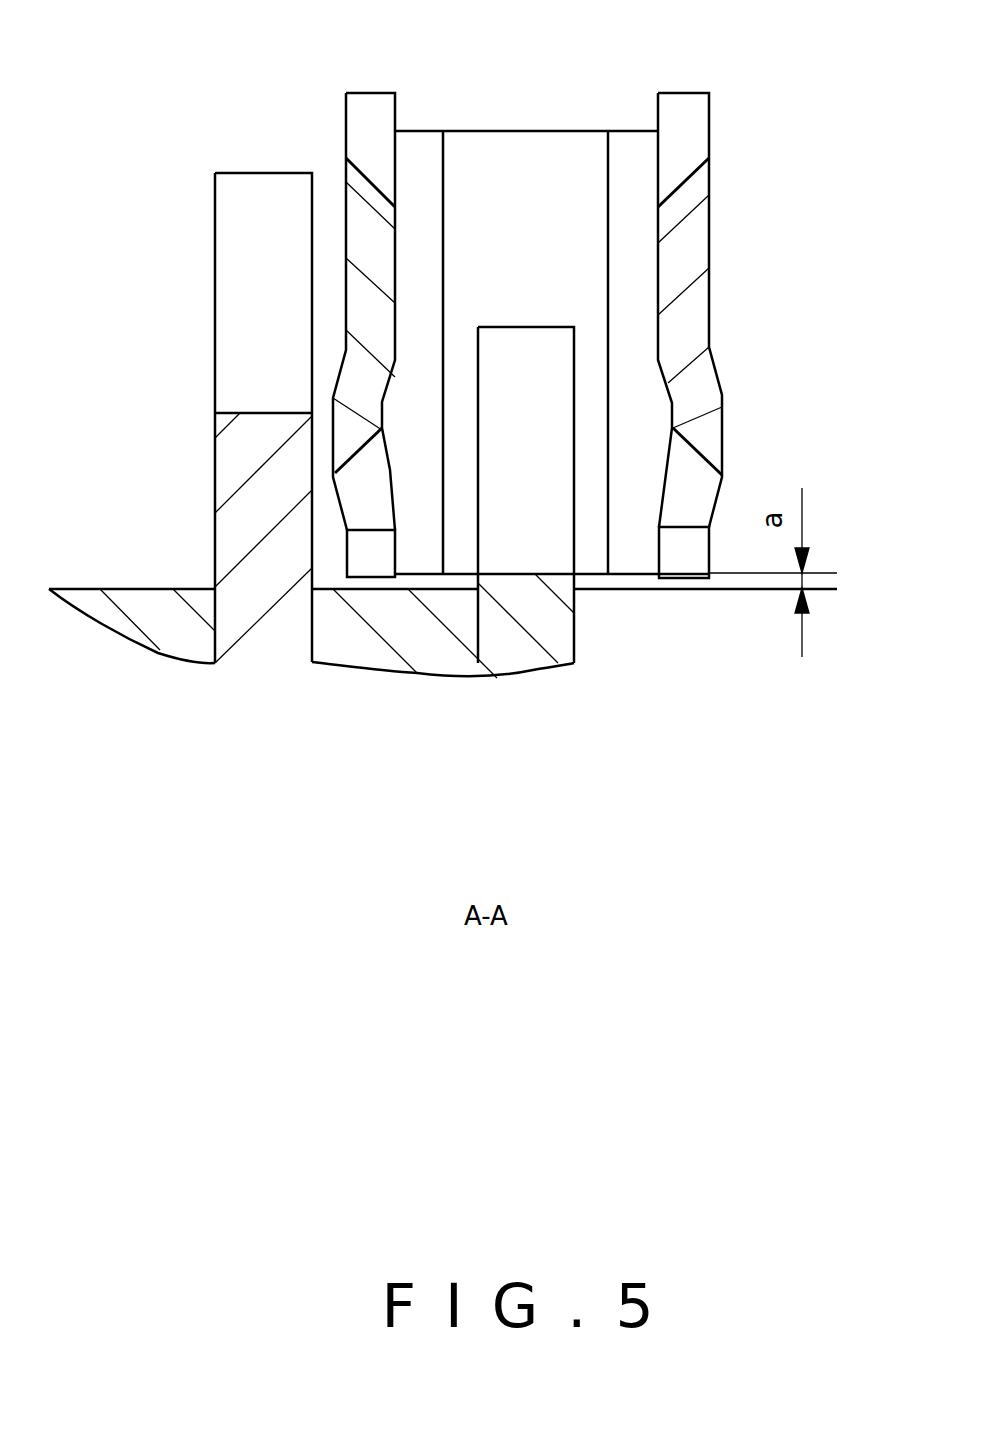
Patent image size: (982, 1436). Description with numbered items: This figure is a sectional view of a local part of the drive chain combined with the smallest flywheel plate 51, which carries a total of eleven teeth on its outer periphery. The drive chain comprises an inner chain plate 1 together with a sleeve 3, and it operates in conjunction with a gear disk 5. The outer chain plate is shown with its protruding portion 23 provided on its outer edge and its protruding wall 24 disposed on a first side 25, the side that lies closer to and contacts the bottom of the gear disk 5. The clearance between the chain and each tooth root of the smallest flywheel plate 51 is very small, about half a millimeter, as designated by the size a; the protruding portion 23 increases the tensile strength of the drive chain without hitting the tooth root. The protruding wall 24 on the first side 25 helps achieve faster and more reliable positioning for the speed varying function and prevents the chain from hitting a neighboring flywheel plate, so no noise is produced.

The inner chain plate 1 is at (420, 146).
The sleeve 3 is at (561, 227).
The gear disk 5 is at (235, 513).
The protruding portion 23 is at (369, 117).
The protruding wall 24 is at (345, 427).
The first side 25 is at (367, 577).
The smallest flywheel plate 51 is at (540, 618).